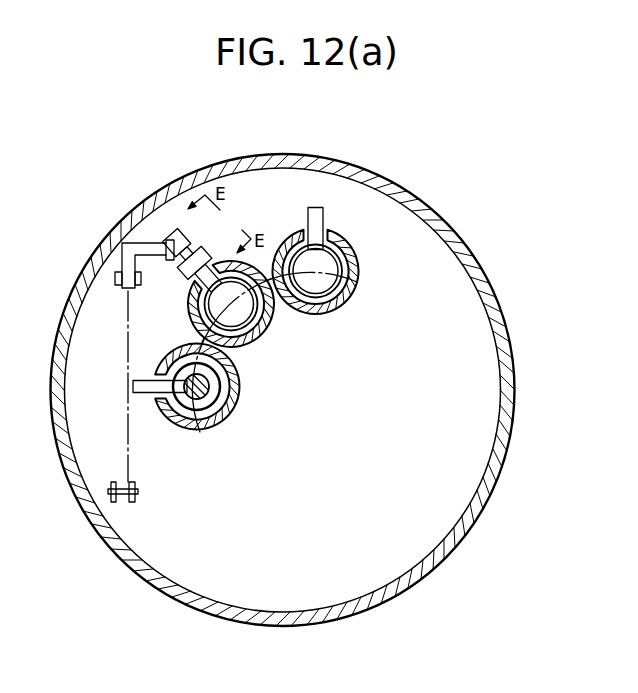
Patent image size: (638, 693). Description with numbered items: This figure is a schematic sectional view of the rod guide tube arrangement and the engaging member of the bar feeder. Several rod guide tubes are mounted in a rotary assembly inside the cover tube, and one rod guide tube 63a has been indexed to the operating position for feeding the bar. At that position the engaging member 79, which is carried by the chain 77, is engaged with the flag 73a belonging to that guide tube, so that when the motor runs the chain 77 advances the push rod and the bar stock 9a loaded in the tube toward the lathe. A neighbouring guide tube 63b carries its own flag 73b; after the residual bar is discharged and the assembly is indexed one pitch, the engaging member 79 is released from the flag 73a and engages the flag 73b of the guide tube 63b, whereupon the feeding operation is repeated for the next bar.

The chain 77 is at (121, 288).
The engaging member 79 is at (217, 244).
The flag 73a is at (195, 281).
The bar stock 9a is at (248, 307).
The rod guide tube 63a is at (257, 341).
The guide tube 63b is at (358, 264).
The flag 73b is at (309, 218).